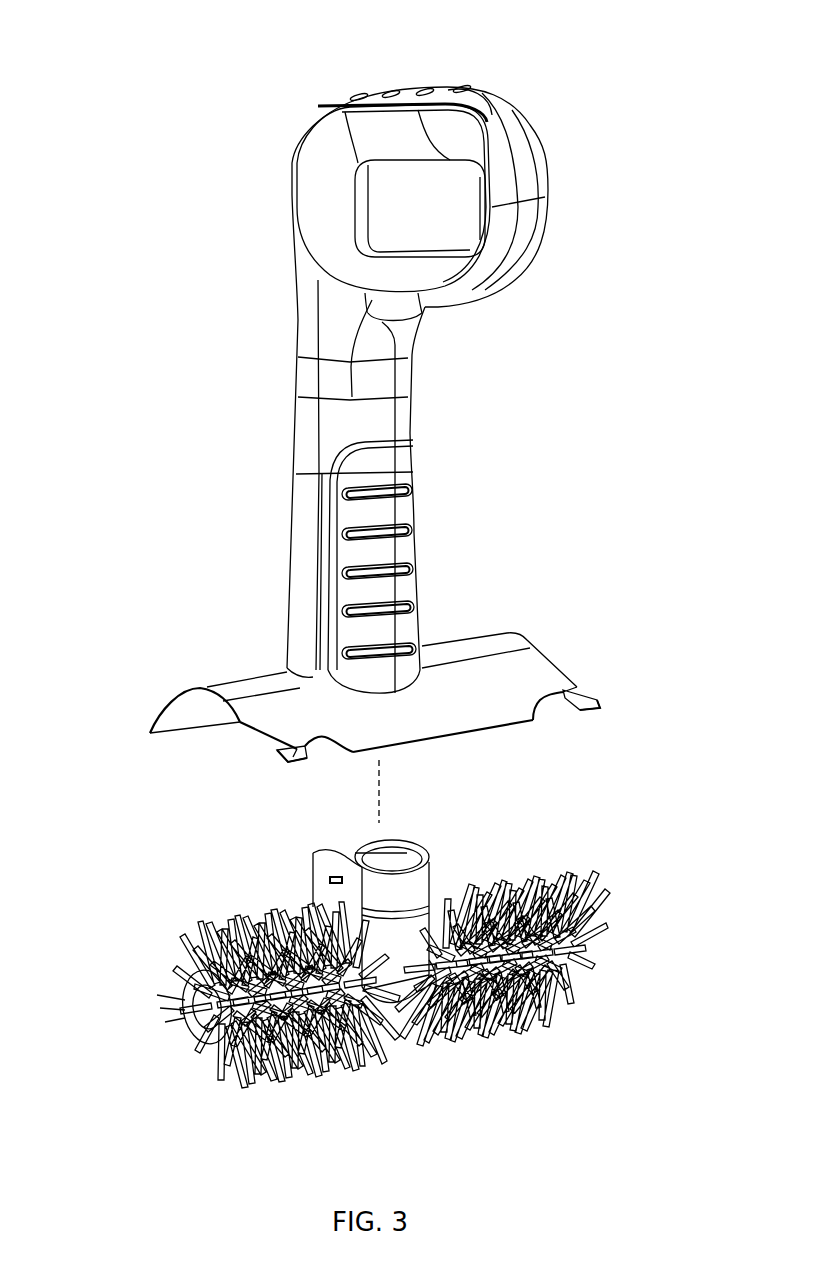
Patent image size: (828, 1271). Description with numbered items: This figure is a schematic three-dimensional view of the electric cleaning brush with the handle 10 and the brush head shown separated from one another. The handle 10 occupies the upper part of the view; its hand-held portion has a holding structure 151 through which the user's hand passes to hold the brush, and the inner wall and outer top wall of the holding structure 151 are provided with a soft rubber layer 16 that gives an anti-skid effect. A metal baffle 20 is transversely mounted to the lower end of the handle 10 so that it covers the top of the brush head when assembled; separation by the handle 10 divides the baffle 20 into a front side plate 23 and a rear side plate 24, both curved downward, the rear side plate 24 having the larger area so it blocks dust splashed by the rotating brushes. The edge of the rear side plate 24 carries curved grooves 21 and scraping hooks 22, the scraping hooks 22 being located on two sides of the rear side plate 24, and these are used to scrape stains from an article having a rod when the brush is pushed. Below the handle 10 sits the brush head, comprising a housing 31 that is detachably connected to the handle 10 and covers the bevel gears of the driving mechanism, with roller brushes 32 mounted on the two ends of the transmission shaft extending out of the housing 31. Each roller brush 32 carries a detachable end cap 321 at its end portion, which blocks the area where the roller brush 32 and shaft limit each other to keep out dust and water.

The handle 10 is at (425, 465).
The soft rubber layer 16 is at (340, 170).
The holding structure 151 is at (470, 228).
The baffle 20 is at (548, 637).
The curved grooves 21 is at (550, 713).
The scraping hooks 22 is at (598, 698).
The front side plate 23 is at (167, 717).
The rear side plate 24 is at (457, 723).
The housing 31 is at (395, 950).
The roller brushes 32 is at (323, 1062).
The end cap 321 is at (200, 1003).